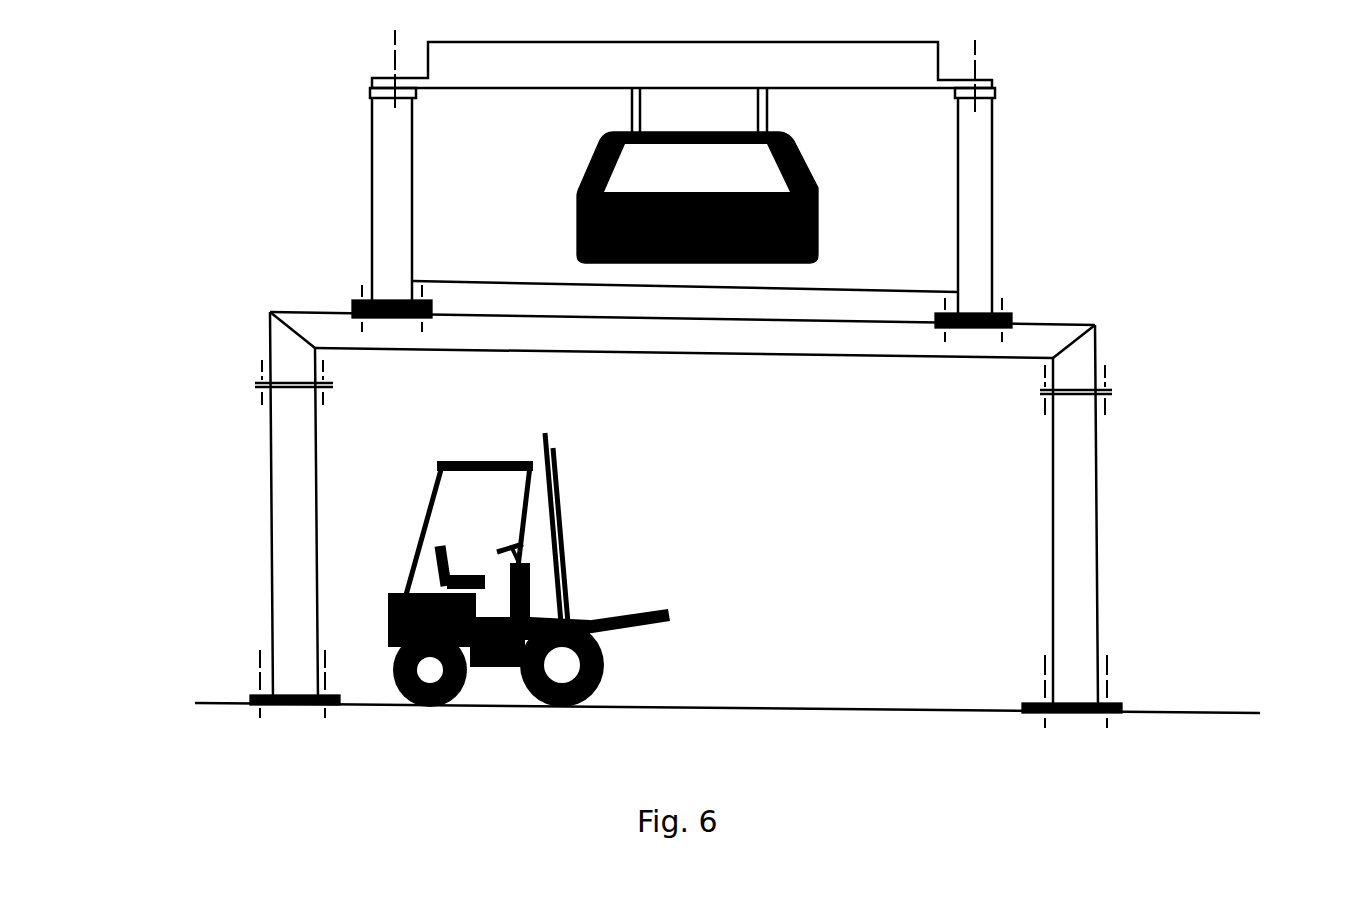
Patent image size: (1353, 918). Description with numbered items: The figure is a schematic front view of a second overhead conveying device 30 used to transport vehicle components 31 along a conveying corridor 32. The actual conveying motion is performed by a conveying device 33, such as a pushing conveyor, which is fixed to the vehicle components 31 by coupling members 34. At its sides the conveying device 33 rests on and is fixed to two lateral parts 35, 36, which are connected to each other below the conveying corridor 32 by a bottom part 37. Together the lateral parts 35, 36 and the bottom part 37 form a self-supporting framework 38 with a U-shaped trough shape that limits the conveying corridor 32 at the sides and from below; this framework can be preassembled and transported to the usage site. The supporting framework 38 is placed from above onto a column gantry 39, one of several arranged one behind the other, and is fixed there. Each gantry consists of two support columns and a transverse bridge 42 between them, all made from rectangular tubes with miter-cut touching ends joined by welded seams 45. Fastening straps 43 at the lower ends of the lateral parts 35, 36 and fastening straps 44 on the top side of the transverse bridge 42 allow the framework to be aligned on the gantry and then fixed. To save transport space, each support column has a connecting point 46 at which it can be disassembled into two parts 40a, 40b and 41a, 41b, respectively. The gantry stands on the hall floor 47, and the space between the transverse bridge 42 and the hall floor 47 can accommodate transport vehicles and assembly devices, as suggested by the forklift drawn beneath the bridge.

The overhead conveying device 30 is at (1262, 289).
The vehicle components 31 is at (820, 205).
The conveying corridor 32 is at (513, 163).
The conveying device 33 is at (693, 48).
The coupling members 34 is at (755, 110).
The lateral part 35 is at (992, 192).
The lateral part 36 is at (380, 200).
The bottom part 37 is at (528, 300).
The supporting framework 38 is at (296, 120).
The column gantry 39 is at (1165, 482).
The support column part 40a is at (1085, 437).
The support column part 40b is at (1095, 345).
The support column part 41a is at (270, 458).
The support column part 41b is at (272, 343).
The transverse bridge 42 is at (752, 343).
The fastening strap 43 is at (434, 301).
The fastening strap 44 is at (430, 320).
The welded seam 45 is at (300, 330).
The connecting point 46 is at (322, 378).
The hall floor 47 is at (1177, 712).